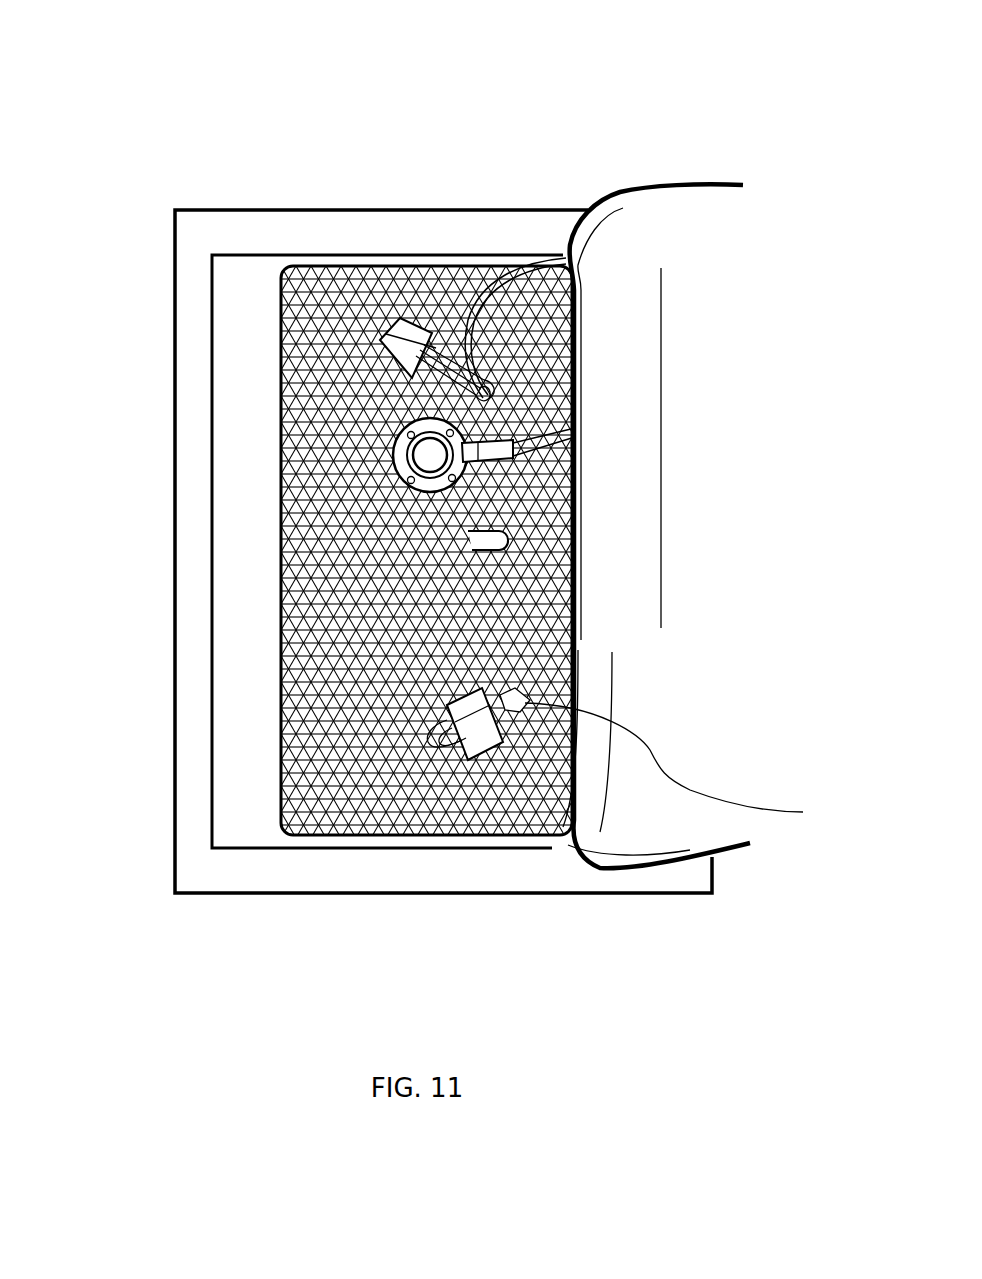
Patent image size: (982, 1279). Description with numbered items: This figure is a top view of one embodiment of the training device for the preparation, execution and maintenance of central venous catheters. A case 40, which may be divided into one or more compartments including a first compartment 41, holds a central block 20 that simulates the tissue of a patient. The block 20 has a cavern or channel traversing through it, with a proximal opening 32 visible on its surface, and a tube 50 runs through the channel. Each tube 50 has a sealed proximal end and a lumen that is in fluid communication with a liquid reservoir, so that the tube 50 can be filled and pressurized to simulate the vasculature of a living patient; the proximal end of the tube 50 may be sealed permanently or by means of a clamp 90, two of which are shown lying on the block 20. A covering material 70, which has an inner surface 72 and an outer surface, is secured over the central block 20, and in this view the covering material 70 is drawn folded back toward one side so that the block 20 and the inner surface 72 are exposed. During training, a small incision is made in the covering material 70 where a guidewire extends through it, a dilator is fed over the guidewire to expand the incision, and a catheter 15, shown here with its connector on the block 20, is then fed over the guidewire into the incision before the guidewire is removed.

The catheter 15 is at (427, 455).
The central block 20 is at (350, 713).
The proximal opening 32 is at (467, 537).
The case 40 is at (190, 733).
The first compartment 41 is at (267, 723).
The tube 50 is at (445, 342).
The covering material 70 is at (653, 364).
The inner surface 72 is at (618, 475).
The clamp 90 is at (392, 330).